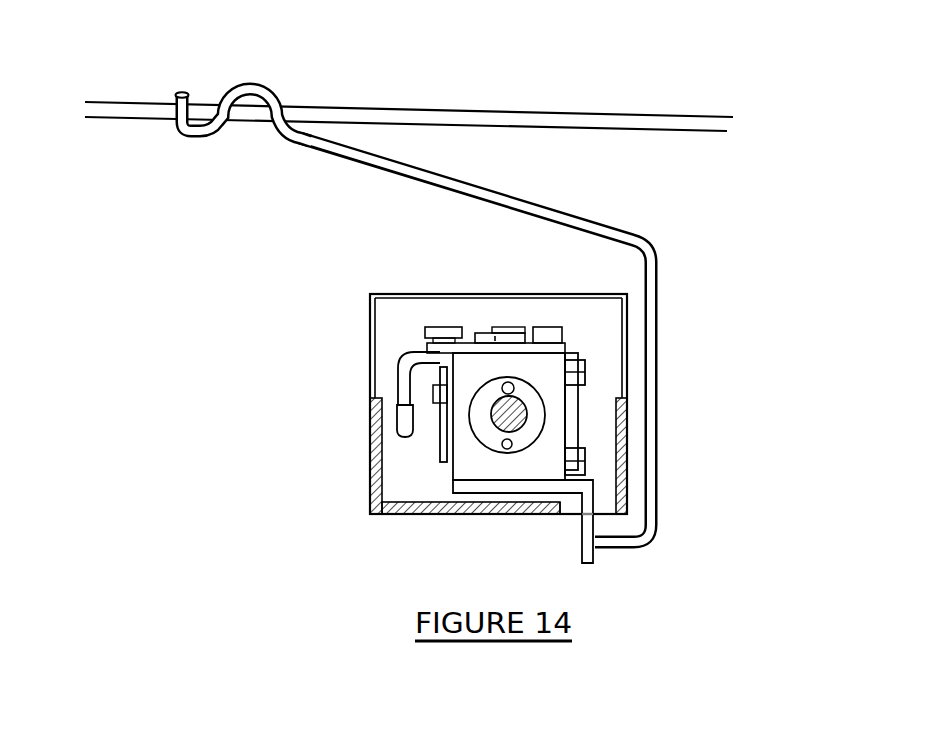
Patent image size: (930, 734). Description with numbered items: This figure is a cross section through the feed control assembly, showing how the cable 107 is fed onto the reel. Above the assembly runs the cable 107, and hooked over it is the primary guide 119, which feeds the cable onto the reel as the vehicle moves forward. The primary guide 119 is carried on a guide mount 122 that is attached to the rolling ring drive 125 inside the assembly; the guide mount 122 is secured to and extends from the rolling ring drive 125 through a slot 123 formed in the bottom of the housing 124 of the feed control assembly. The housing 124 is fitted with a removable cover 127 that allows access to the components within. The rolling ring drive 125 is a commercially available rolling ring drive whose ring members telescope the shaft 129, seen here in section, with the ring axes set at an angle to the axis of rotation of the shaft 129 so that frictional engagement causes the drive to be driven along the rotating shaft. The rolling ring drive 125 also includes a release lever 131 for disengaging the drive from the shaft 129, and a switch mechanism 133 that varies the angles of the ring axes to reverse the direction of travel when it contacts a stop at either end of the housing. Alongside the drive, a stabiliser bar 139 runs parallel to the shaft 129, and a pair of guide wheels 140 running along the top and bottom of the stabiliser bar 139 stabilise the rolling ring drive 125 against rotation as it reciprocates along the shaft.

The cable 107 is at (525, 118).
The primary guide 119 is at (255, 83).
The guide mount 122 is at (593, 563).
The slot 123 is at (600, 503).
The housing 124 is at (372, 472).
The rolling ring drive 125 is at (473, 468).
The removable cover 127 is at (400, 296).
The shaft 129 is at (512, 425).
The release lever 131 is at (398, 428).
The switch mechanism 133 is at (553, 335).
The stabiliser bar 139 is at (575, 415).
The guide wheels 140 is at (583, 370).